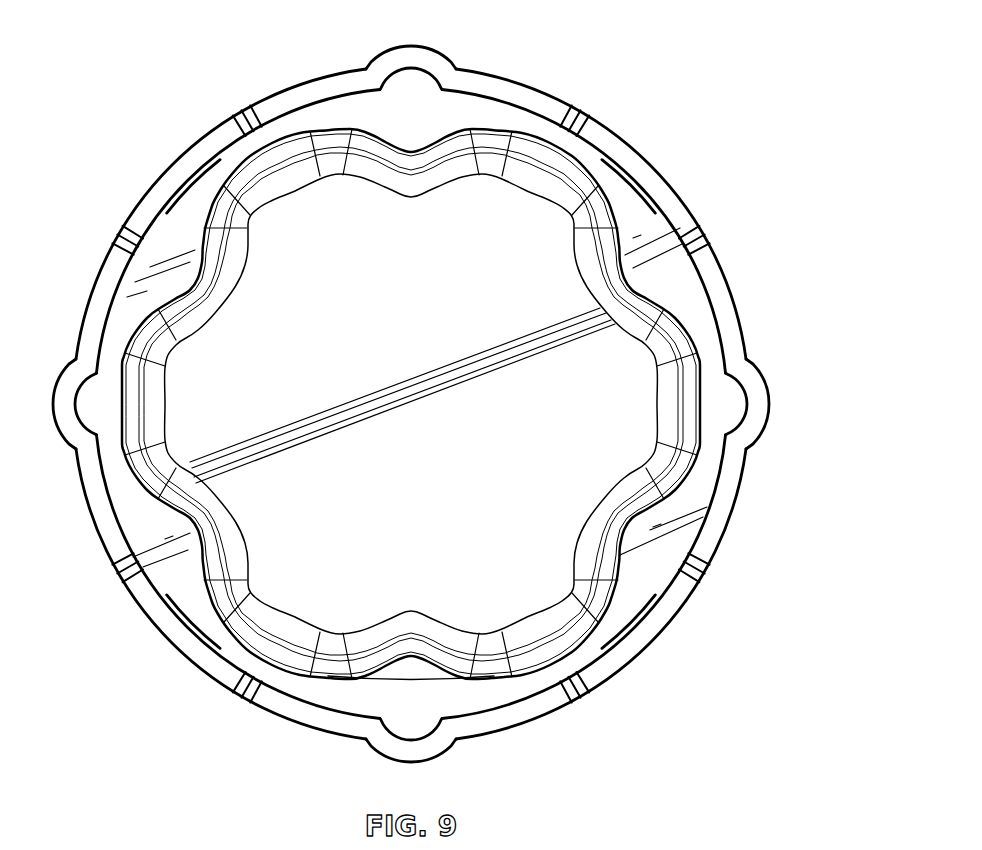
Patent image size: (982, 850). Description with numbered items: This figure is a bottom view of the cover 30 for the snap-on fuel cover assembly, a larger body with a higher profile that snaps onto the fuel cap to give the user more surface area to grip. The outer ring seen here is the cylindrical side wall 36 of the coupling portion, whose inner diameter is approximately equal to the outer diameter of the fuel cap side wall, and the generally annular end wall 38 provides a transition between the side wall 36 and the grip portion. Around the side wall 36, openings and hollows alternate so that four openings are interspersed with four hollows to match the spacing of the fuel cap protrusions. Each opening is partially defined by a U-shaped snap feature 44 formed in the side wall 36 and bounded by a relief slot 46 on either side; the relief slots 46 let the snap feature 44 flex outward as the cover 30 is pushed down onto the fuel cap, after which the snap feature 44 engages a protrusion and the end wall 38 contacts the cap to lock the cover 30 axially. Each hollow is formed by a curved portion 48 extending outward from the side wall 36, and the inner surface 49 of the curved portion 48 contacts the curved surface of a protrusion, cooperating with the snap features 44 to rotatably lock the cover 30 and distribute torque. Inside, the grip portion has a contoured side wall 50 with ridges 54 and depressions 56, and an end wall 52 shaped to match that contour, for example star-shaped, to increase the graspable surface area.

The cover 30 is at (555, 48).
The cylindrical side wall 36 is at (720, 503).
The annular end wall 38 is at (467, 106).
The U-shaped snap feature 44 is at (666, 190).
The relief slot 46 is at (580, 117).
The curved portion 48 is at (764, 402).
The inner surface 49 is at (743, 415).
The contoured side wall 50 is at (387, 188).
The end wall 52 is at (632, 408).
The ridges 54 is at (278, 205).
The depressions 56 is at (424, 206).